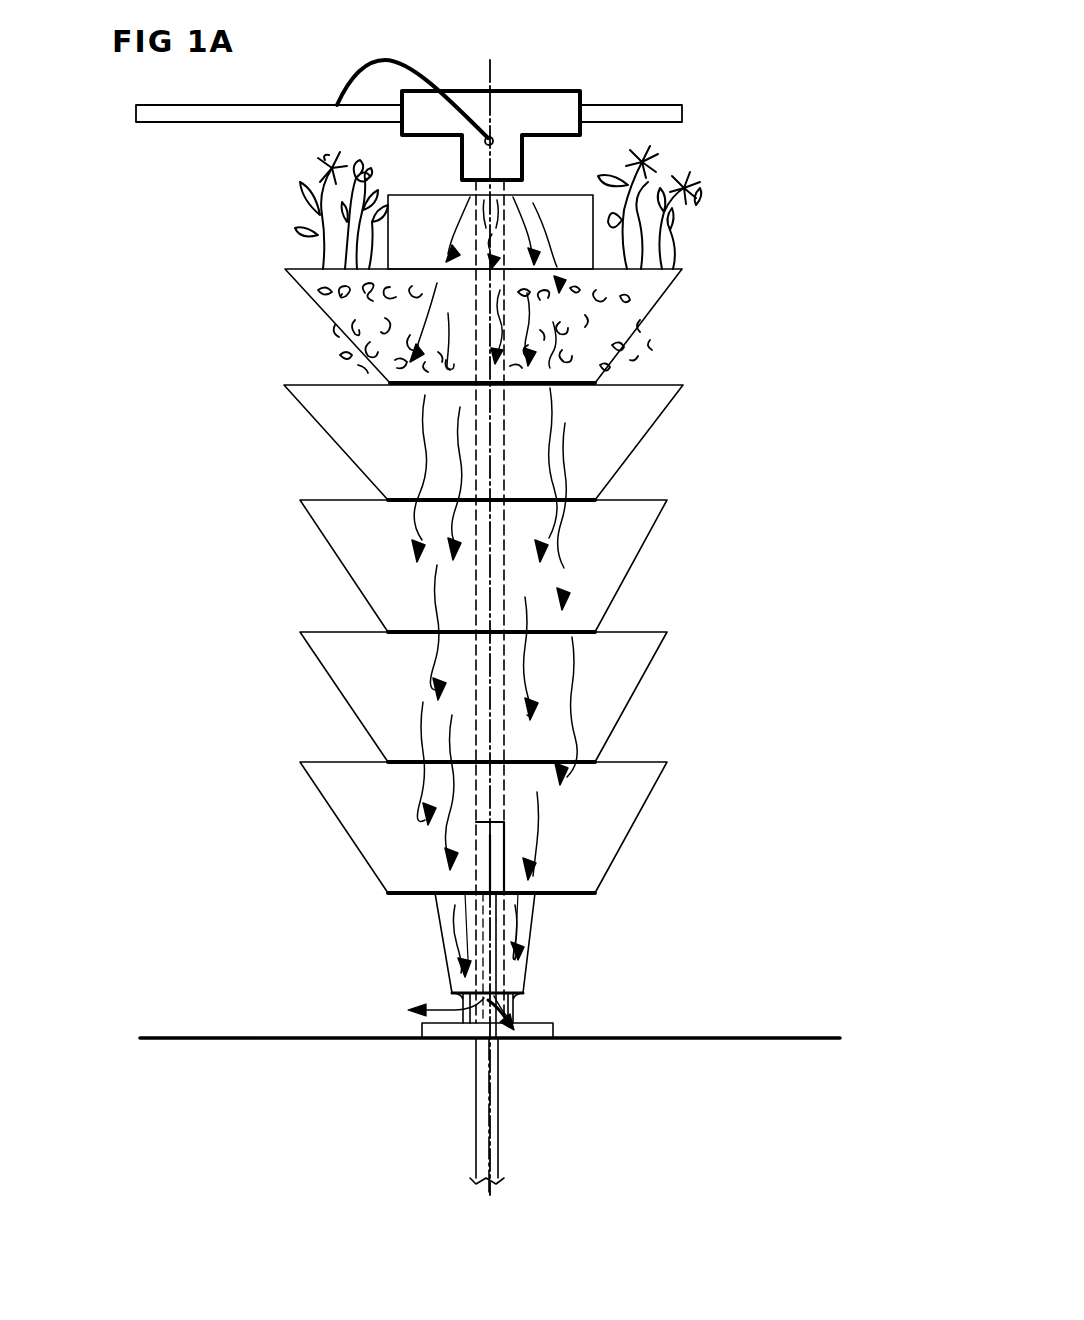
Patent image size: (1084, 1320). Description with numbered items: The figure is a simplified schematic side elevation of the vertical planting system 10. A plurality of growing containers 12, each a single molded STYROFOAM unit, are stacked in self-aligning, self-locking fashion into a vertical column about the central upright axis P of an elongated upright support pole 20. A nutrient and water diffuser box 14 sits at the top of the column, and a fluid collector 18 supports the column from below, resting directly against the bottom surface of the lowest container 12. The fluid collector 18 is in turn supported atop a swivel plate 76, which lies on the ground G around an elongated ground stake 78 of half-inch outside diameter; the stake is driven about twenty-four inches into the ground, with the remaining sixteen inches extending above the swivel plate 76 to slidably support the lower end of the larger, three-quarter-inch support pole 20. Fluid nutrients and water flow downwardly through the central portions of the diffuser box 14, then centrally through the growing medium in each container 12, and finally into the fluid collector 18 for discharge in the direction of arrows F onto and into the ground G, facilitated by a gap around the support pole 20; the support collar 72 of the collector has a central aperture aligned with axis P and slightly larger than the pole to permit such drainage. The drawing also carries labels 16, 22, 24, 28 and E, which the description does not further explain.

The vertical planting system 10 is at (820, 222).
The growing container 12 is at (656, 338).
The nutrient and water diffuser box 14 is at (568, 185).
The T fitting 16 is at (528, 72).
The fluid collector 18 is at (548, 944).
The support pole 20 is at (507, 800).
The top plate 22 is at (553, 90).
The cable 24 is at (418, 68).
The support bar 28 is at (282, 125).
The support collar 72 is at (521, 1008).
The swivel plate 76 is at (538, 1022).
The ground stake 78 is at (500, 1098).
The air flow E is at (592, 528).
The discharge direction arrows F is at (443, 1010).
The ground G is at (665, 1038).
The central upright axis P is at (492, 1157).